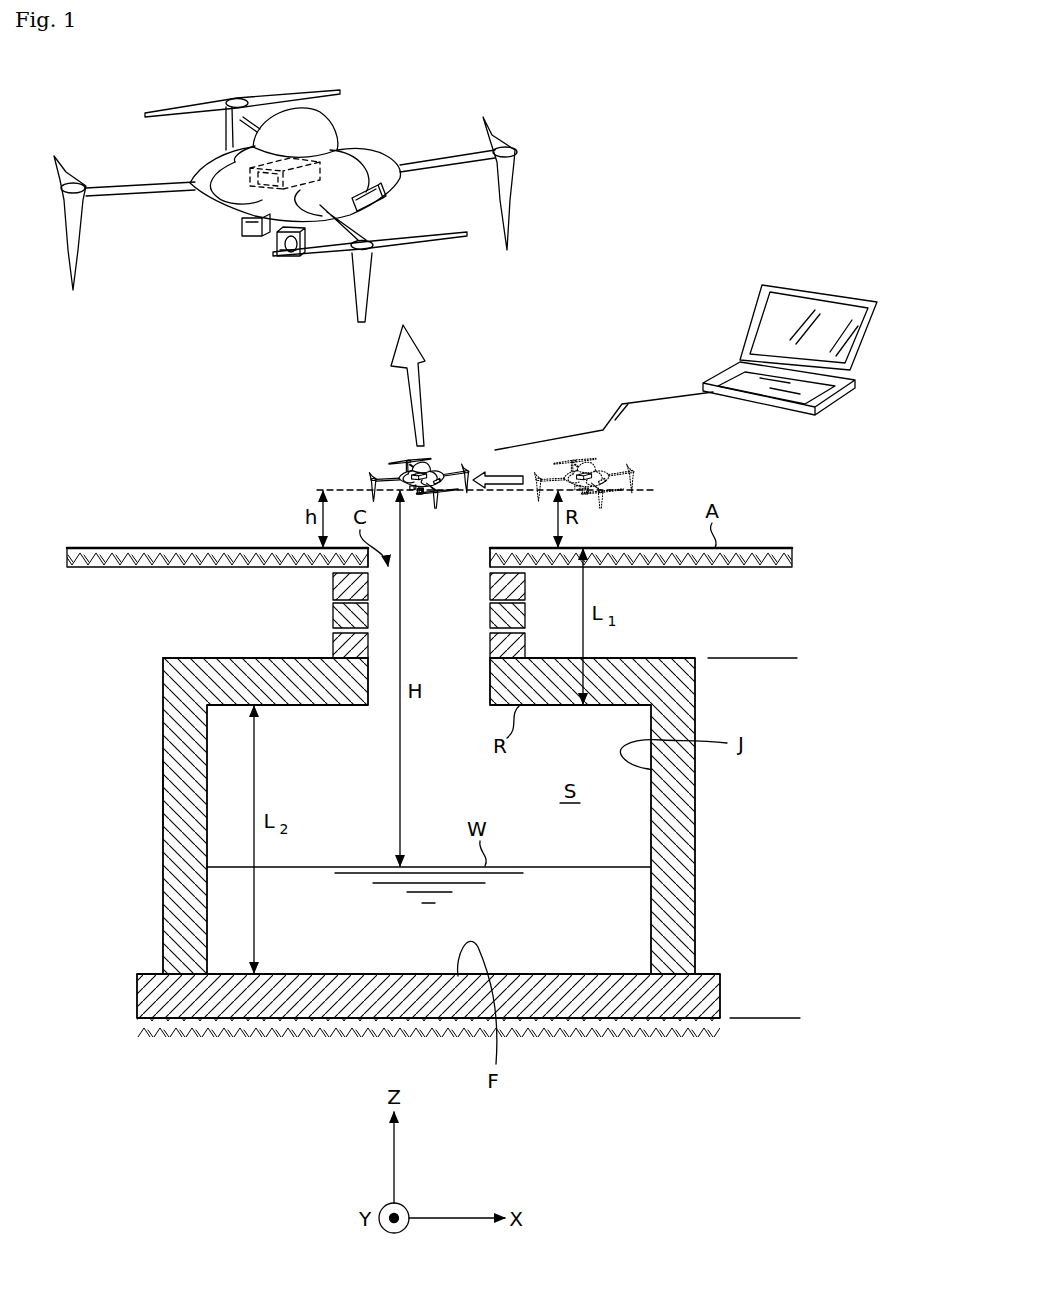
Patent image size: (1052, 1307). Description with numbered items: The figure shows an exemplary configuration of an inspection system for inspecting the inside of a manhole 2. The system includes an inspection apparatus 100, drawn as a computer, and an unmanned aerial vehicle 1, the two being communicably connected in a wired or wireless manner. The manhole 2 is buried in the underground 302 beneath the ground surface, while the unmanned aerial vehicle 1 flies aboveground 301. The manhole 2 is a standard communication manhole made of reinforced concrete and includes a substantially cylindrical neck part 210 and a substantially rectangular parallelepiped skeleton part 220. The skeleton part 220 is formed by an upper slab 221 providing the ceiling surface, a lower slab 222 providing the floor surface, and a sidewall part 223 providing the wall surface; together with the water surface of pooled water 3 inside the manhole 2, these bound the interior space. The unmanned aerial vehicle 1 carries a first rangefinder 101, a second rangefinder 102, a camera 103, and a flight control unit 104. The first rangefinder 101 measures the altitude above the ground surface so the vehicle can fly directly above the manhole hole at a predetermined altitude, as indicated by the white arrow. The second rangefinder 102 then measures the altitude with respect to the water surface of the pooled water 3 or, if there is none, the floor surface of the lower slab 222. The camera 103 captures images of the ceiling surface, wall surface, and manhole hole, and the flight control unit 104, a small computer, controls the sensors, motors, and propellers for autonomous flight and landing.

The unmanned aerial vehicle 1 is at (392, 116).
The inspection apparatus 100 is at (750, 320).
The first rangefinder 101 is at (246, 226).
The second rangefinder 102 is at (374, 197).
The camera 103 is at (280, 248).
The flight control unit 104 is at (250, 168).
The manhole 2 is at (489, 820).
The neck part 210 is at (800, 548).
The skeleton part 220 is at (471, 852).
The upper slab 221 is at (252, 683).
The lower slab 222 is at (310, 997).
The sidewall part 223 is at (170, 793).
The pooled water 3 is at (608, 927).
The aboveground 301 is at (90, 531).
The underground 302 is at (90, 611).